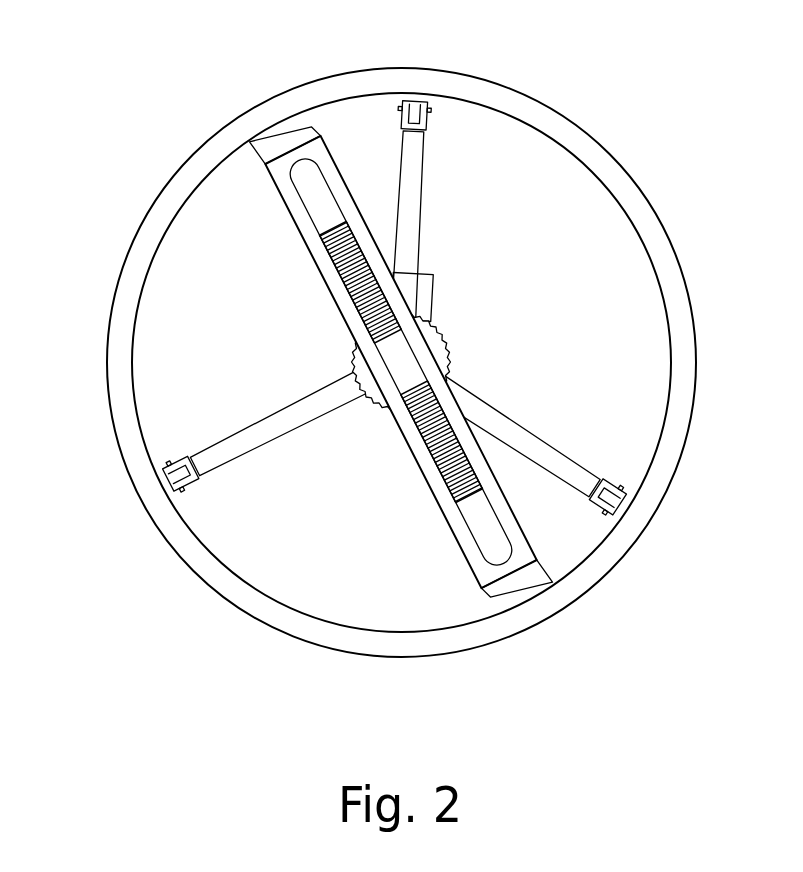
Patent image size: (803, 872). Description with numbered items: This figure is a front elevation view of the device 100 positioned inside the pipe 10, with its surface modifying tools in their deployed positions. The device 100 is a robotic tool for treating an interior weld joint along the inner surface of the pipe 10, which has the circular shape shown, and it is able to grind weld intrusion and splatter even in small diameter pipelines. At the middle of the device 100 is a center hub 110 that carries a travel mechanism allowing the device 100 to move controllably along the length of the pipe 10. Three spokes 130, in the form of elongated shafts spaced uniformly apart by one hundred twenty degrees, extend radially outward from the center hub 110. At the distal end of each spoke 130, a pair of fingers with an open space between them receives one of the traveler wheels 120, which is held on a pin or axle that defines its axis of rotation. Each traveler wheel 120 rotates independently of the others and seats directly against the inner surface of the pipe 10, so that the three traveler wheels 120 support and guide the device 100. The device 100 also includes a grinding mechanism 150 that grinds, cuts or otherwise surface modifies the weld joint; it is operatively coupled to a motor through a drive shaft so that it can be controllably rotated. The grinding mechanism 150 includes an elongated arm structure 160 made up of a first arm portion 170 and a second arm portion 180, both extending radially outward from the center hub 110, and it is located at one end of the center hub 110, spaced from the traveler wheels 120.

The pipe 10 is at (140, 222).
The device 100 is at (384, 307).
The center hub 110 is at (437, 349).
The traveler wheels 120 is at (410, 104).
The spokes 130 is at (235, 432).
The grinding mechanism 150 is at (308, 337).
The elongated arm structure 160 is at (401, 362).
The first arm portion 170 is at (442, 441).
The second arm portion 180 is at (361, 282).